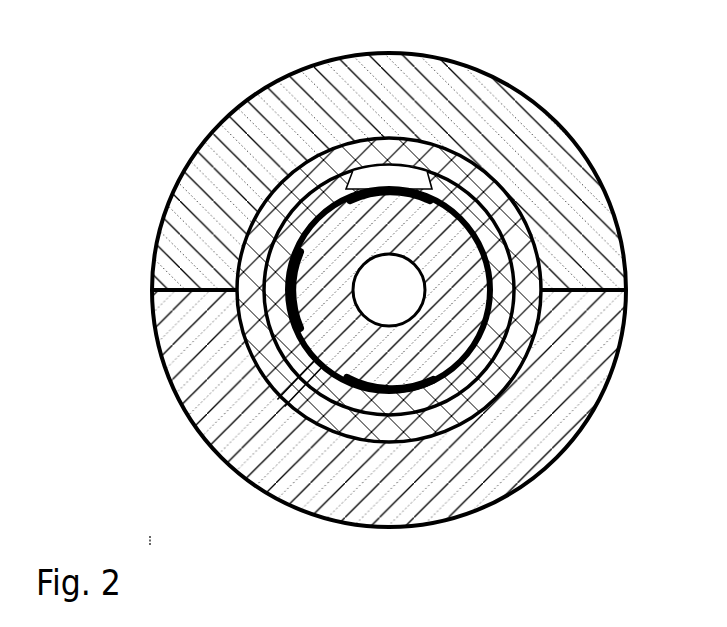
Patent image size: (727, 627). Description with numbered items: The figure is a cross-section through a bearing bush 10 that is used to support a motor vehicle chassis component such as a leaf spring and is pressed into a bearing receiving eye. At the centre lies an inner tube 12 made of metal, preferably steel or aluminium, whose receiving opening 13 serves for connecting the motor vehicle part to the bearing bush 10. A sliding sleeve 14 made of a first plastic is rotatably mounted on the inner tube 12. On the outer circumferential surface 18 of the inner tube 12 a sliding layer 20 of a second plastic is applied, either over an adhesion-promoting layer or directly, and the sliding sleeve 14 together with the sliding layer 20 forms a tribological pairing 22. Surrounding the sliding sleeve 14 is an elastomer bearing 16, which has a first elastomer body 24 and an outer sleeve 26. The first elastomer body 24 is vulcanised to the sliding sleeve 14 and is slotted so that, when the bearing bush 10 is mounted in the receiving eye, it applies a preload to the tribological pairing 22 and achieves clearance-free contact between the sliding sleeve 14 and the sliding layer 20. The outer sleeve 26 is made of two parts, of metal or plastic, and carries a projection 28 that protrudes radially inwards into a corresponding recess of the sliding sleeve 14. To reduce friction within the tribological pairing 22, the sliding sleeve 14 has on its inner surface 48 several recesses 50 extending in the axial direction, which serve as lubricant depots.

The bearing bush 10 is at (565, 108).
The inner tube 12 is at (463, 297).
The receiving opening 13 is at (407, 302).
The sliding sleeve 14 is at (492, 216).
The elastomer bearing 16 is at (603, 188).
The outer circumferential surface 18 is at (285, 270).
The sliding layer 20 is at (283, 297).
The tribological pairing 22 is at (313, 213).
The first elastomer body 24 is at (430, 160).
The outer sleeve 26 is at (571, 397).
The projection 28 is at (353, 450).
The inner surface 48 is at (459, 362).
The recesses 50 is at (348, 186).